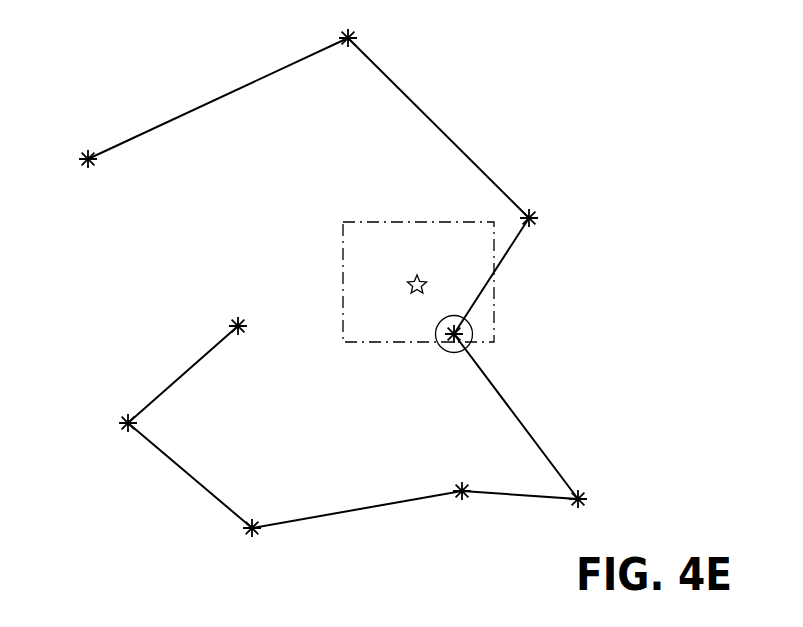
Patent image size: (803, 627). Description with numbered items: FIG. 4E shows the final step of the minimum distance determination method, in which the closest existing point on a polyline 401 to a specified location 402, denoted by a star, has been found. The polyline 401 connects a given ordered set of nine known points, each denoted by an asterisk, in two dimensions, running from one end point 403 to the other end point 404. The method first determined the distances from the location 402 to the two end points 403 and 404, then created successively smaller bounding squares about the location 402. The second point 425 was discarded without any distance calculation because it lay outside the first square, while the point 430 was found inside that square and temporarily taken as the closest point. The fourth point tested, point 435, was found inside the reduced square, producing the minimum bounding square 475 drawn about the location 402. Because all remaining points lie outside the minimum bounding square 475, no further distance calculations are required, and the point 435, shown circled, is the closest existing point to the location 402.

The polyline 401 is at (408, 97).
The specified location 402 is at (409, 291).
The end point 403 is at (80, 164).
The end point 404 is at (228, 322).
The point 425 is at (358, 34).
The point 430 is at (538, 213).
The point 435 is at (440, 349).
The minimum bounding square 475 is at (496, 304).